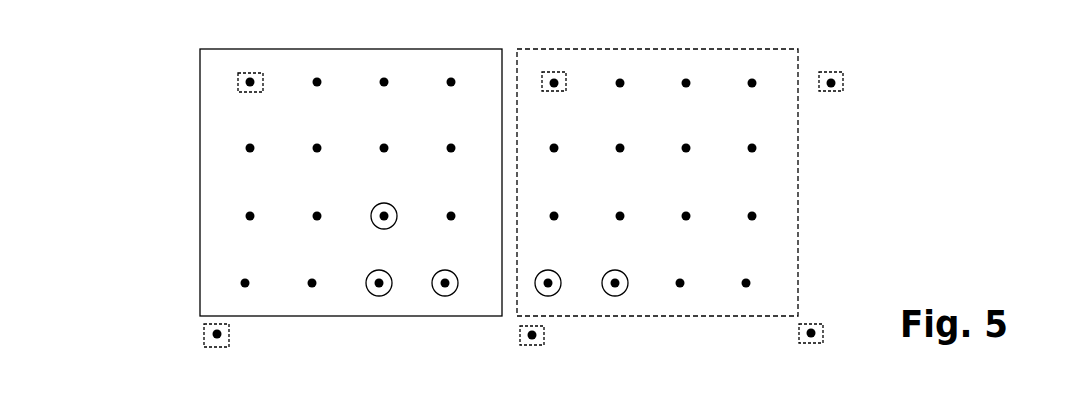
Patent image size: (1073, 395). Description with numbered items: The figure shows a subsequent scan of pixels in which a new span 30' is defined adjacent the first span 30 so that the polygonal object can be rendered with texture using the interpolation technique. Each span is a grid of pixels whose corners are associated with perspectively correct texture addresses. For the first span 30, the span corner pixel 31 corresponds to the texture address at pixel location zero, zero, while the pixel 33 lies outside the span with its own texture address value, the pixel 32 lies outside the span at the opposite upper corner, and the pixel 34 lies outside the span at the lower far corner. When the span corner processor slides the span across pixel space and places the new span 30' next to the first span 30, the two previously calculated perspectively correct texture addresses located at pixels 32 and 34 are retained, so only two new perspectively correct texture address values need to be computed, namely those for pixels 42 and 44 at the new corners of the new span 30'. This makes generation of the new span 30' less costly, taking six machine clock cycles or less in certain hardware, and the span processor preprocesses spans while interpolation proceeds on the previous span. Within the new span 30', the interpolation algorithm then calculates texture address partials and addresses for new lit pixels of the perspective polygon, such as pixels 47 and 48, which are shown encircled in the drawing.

The first span 30 is at (351, 166).
The new span 30' is at (657, 164).
The span corner pixel 31 is at (241, 93).
The pixel 32 is at (566, 93).
The pixel 33 is at (208, 347).
The pixel 34 is at (534, 347).
The pixel 42 is at (841, 93).
The pixel 44 is at (823, 330).
The pixel 47 is at (548, 270).
The pixel 48 is at (612, 270).